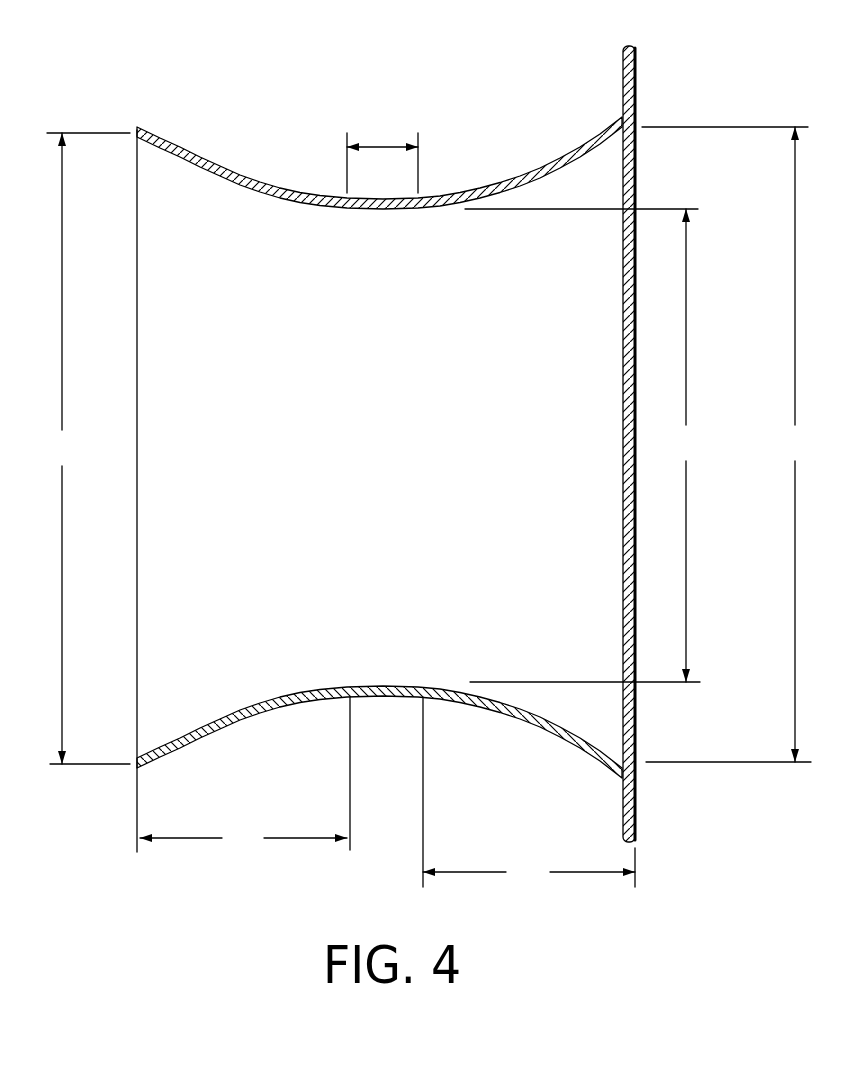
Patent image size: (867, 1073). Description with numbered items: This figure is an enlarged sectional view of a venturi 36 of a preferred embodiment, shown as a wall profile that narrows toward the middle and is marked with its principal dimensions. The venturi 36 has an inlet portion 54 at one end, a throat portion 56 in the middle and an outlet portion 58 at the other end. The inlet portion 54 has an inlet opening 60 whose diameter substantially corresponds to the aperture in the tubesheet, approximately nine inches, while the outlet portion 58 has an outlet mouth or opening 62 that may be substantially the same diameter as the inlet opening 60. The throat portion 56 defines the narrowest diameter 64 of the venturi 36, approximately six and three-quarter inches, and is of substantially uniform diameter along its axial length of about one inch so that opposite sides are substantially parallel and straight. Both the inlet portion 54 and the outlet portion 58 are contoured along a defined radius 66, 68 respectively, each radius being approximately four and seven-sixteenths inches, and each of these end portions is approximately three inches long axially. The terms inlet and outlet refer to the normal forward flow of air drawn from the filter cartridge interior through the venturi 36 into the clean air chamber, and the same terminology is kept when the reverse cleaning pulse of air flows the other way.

The venturi 36 is at (114, 56).
The inlet portion 54 is at (529, 792).
The throat portion 56 is at (381, 143).
The outlet portion 58 is at (245, 775).
The inlet opening 60 is at (727, 444).
The outlet opening 62 is at (91, 491).
The narrowest diameter 64 is at (584, 445).
The radius of inlet portion 66 is at (595, 132).
The radius of outlet portion 68 is at (213, 162).